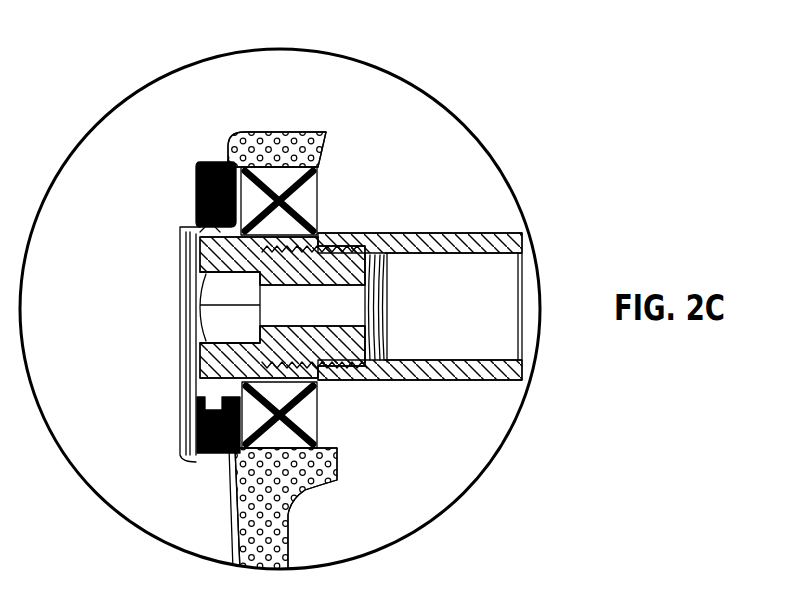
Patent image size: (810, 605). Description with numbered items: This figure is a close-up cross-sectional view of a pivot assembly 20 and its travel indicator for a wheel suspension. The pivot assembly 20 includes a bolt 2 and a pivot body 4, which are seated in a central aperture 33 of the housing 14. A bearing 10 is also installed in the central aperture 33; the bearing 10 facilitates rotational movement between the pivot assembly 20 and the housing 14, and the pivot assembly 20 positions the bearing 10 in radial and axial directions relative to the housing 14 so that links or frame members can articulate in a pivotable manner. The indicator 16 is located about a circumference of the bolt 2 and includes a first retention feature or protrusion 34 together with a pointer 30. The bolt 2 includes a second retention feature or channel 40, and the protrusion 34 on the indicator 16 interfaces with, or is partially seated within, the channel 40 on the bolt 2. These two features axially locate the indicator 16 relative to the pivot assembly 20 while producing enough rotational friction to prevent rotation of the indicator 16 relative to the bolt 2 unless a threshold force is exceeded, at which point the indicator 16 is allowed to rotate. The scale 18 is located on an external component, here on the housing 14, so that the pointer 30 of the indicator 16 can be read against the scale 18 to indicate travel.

The bolt 2 is at (349, 248).
The pivot body 4 is at (424, 235).
The bearing 10 is at (312, 190).
The housing 14 is at (284, 165).
The indicator 16 is at (198, 192).
The scale 18 is at (222, 498).
The pivot assembly 20 is at (433, 515).
The pointer 30 is at (197, 447).
The central aperture 33 is at (232, 164).
The protrusion 34 is at (197, 226).
The channel 40 is at (200, 262).